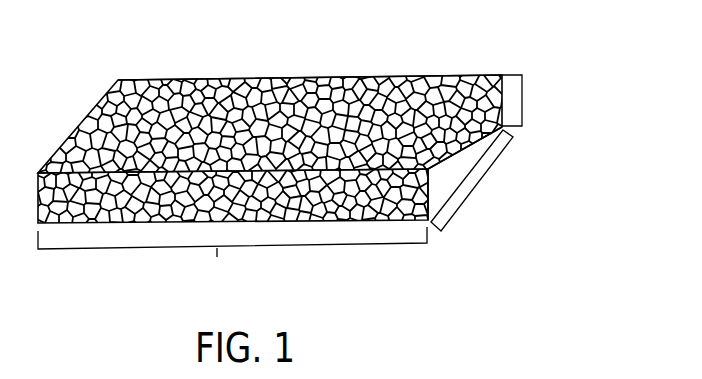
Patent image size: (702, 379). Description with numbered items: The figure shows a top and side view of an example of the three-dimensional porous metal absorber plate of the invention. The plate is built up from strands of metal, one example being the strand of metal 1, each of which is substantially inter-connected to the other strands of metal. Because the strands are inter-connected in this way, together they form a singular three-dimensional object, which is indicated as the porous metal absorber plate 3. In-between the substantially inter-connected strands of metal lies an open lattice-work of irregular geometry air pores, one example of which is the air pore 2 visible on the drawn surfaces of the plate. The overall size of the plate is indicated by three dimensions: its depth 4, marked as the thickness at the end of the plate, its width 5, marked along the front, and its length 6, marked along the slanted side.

The strand of metal 1 is at (157, 113).
The air pore 2 is at (450, 162).
The 3-dimensional porous metal absorber plate 3 is at (412, 61).
The depth 4 is at (522, 101).
The width 5 is at (232, 261).
The length 6 is at (476, 176).